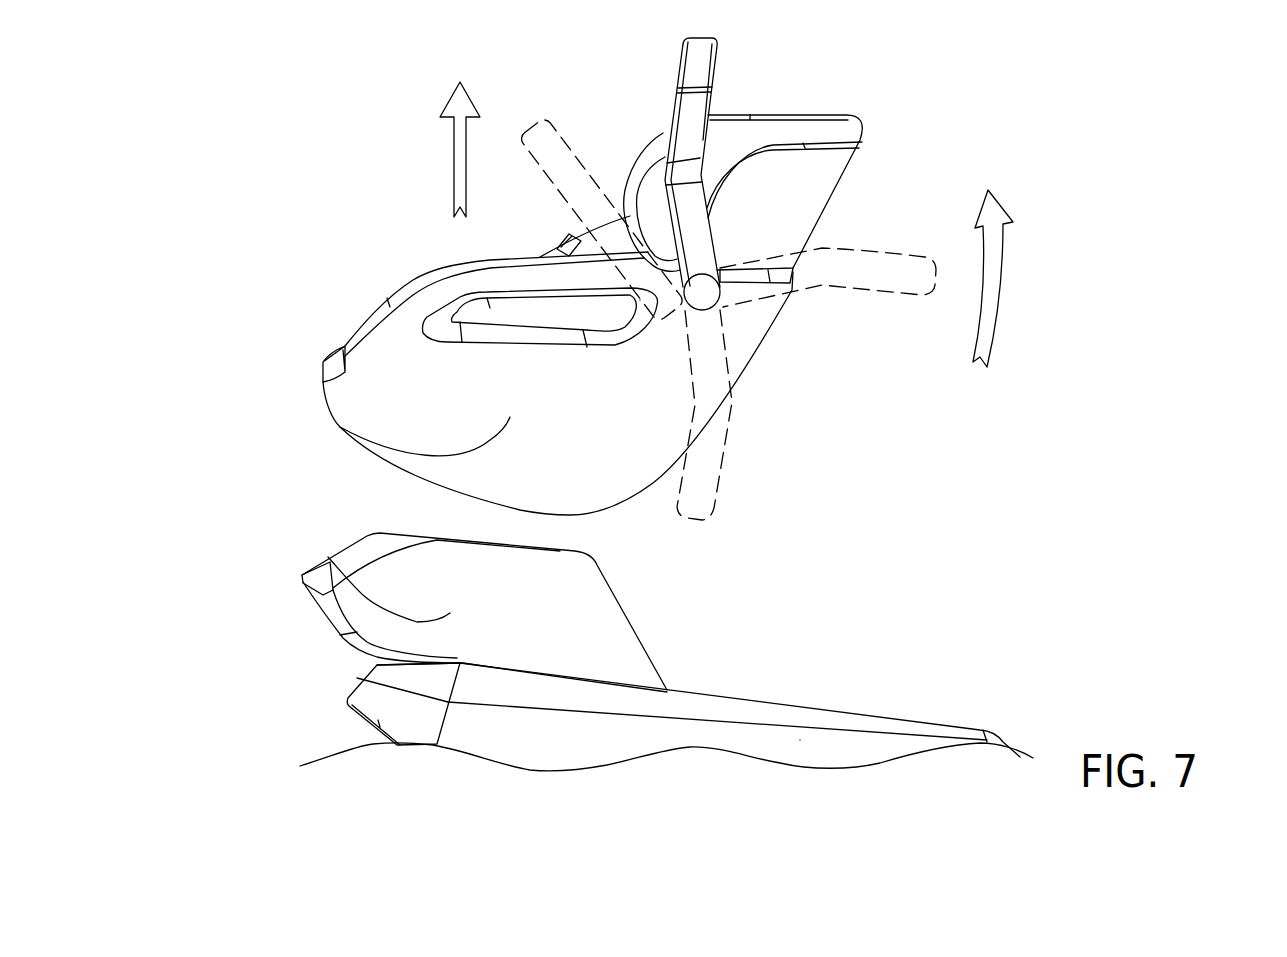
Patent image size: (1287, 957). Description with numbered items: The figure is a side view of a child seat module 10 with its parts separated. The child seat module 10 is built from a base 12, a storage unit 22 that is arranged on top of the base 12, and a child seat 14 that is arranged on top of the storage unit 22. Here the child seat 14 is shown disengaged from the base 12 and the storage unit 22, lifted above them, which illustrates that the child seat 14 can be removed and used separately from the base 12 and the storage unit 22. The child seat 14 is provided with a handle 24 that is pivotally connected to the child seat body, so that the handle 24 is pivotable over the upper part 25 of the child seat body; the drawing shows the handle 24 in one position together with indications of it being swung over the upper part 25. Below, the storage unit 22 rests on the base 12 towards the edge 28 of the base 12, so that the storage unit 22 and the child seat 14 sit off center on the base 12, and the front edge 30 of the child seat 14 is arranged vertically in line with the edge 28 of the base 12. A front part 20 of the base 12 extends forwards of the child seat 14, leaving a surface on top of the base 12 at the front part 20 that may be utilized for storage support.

The child seat module 10 is at (960, 150).
The base 12 is at (803, 753).
The child seat 14 is at (363, 431).
The front part 20 is at (982, 683).
The storage unit 22 is at (328, 557).
The handle 24 is at (703, 72).
The upper part 25 is at (887, 93).
The edge 28 is at (352, 684).
The front edge 30 is at (323, 373).